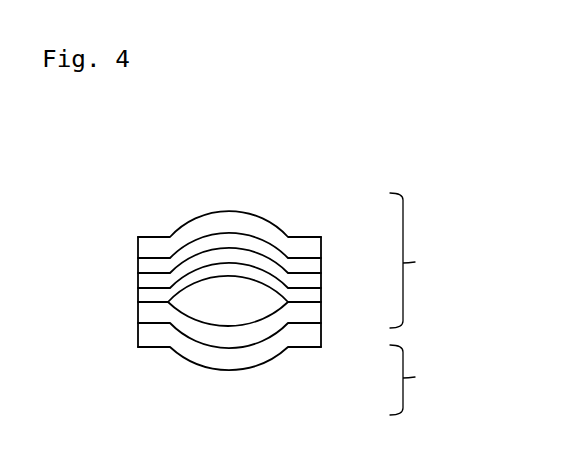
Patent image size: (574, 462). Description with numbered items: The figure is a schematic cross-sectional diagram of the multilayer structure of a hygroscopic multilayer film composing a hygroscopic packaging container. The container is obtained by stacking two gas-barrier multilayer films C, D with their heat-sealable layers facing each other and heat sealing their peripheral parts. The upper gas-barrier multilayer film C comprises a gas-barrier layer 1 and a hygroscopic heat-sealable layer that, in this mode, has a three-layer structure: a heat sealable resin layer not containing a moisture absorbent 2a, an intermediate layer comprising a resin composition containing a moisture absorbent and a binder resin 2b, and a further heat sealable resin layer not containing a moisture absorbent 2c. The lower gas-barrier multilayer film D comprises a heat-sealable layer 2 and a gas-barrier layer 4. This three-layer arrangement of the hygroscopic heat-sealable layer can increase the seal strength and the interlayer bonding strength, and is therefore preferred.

The gas-barrier layer 1 is at (321, 243).
The heat sealable resin layer not containing a moisture absorbent 2a is at (321, 268).
The intermediate layer 2b is at (321, 283).
The heat sealable resin layer not containing a moisture absorbent 2c is at (321, 297).
The heat-sealable layer 2 is at (321, 307).
The gas-barrier layer 4 is at (321, 342).
The gas-barrier multilayer film C is at (413, 260).
The gas-barrier multilayer film D is at (414, 380).